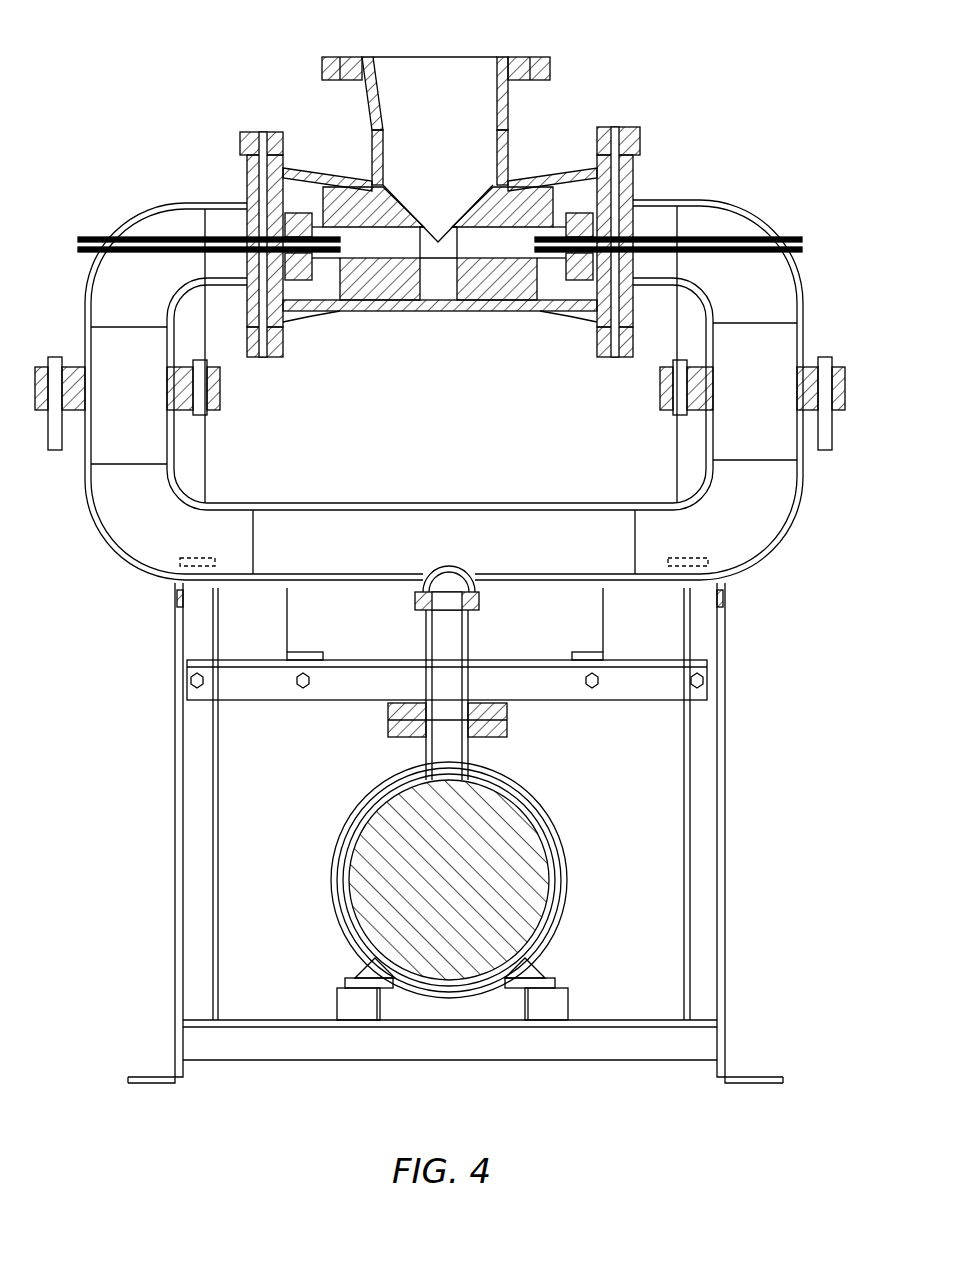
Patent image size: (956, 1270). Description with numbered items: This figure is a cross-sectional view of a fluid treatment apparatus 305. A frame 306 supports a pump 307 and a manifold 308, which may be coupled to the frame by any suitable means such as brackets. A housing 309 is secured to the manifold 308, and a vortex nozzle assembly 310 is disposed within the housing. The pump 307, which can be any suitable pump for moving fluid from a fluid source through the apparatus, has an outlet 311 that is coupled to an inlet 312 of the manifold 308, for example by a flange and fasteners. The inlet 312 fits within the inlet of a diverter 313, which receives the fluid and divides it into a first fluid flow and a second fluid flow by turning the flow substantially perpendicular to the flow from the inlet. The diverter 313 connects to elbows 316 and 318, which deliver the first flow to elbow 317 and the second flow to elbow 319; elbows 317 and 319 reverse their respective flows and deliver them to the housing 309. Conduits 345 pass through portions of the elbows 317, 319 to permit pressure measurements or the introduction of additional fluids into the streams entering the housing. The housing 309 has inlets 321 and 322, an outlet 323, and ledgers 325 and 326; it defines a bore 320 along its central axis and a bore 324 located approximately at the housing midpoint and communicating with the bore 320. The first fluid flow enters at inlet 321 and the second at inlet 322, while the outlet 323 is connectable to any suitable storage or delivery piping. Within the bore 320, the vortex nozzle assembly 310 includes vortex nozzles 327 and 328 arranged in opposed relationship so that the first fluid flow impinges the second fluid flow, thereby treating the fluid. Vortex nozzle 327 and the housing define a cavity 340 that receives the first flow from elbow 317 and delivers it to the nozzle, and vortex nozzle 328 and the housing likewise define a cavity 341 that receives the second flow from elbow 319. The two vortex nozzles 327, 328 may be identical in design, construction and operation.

The apparatus 305 is at (128, 613).
The frame 306 is at (182, 828).
The pump 307 is at (540, 795).
The manifold 308 is at (368, 490).
The housing 309 is at (471, 325).
The vortex nozzle assembly 310 is at (441, 322).
The outlet 311 is at (428, 752).
The inlet 312 is at (468, 628).
The diverter 313 is at (462, 498).
The elbow 316 is at (105, 548).
The elbow 317 is at (155, 205).
The elbow 318 is at (780, 540).
The elbow 319 is at (730, 208).
The bore 320 is at (430, 292).
The inlet 321 is at (245, 200).
The inlet 322 is at (634, 192).
The outlet 323 is at (430, 67).
The bore 324 is at (467, 127).
The ledger 325 is at (347, 302).
The ledger 326 is at (535, 302).
The vortex nozzle 327 is at (368, 185).
The vortex nozzle 328 is at (513, 185).
The cavity 340 is at (292, 187).
The cavity 341 is at (583, 183).
The conduit 345 is at (166, 258).